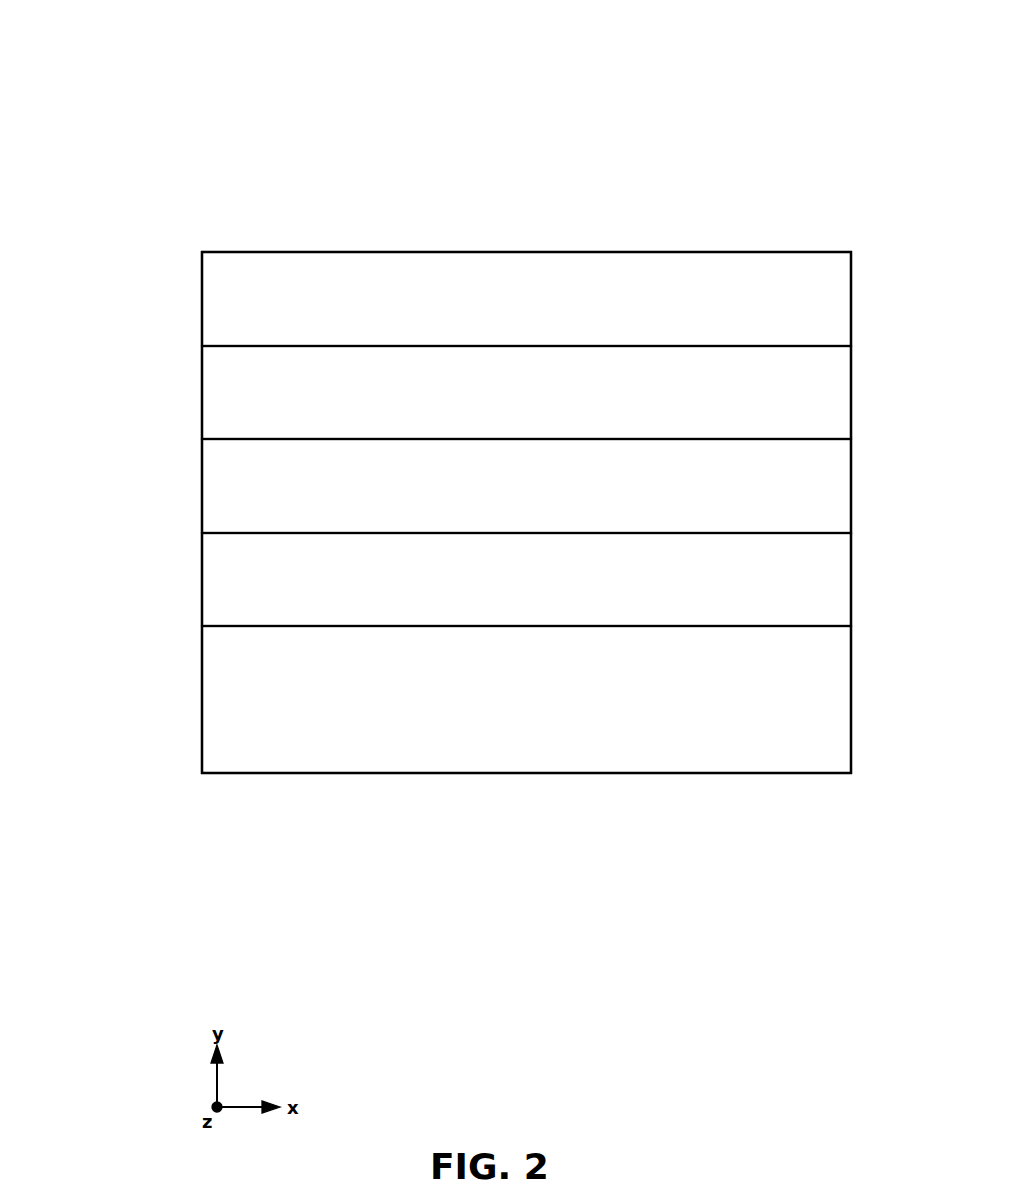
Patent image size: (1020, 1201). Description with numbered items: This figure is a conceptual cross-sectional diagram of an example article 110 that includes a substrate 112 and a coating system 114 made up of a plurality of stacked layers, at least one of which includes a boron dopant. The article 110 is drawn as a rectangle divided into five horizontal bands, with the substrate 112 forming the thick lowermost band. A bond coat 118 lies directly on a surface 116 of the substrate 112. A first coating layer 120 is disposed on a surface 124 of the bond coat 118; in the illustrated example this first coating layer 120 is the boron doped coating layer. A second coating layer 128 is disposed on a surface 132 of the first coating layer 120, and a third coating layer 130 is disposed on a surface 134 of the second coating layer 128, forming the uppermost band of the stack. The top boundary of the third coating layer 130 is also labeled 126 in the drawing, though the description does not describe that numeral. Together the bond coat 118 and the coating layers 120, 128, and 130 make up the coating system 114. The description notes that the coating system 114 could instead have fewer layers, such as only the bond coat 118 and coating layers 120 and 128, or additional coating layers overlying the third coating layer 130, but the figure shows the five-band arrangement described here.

The article 110 is at (143, 93).
The coating system 114 is at (97, 250).
The substrate 112 is at (225, 715).
The surface of substrate 116 is at (833, 626).
The bond coat 118 is at (230, 580).
The first coating layer 120 is at (230, 488).
The surface of bond coat 124 is at (823, 533).
The top surface of stack 126 is at (682, 252).
The second coating layer 128 is at (225, 392).
The third coating layer 130 is at (222, 291).
The surface of first coating layer 132 is at (828, 439).
The surface of second coating layer 134 is at (828, 345).